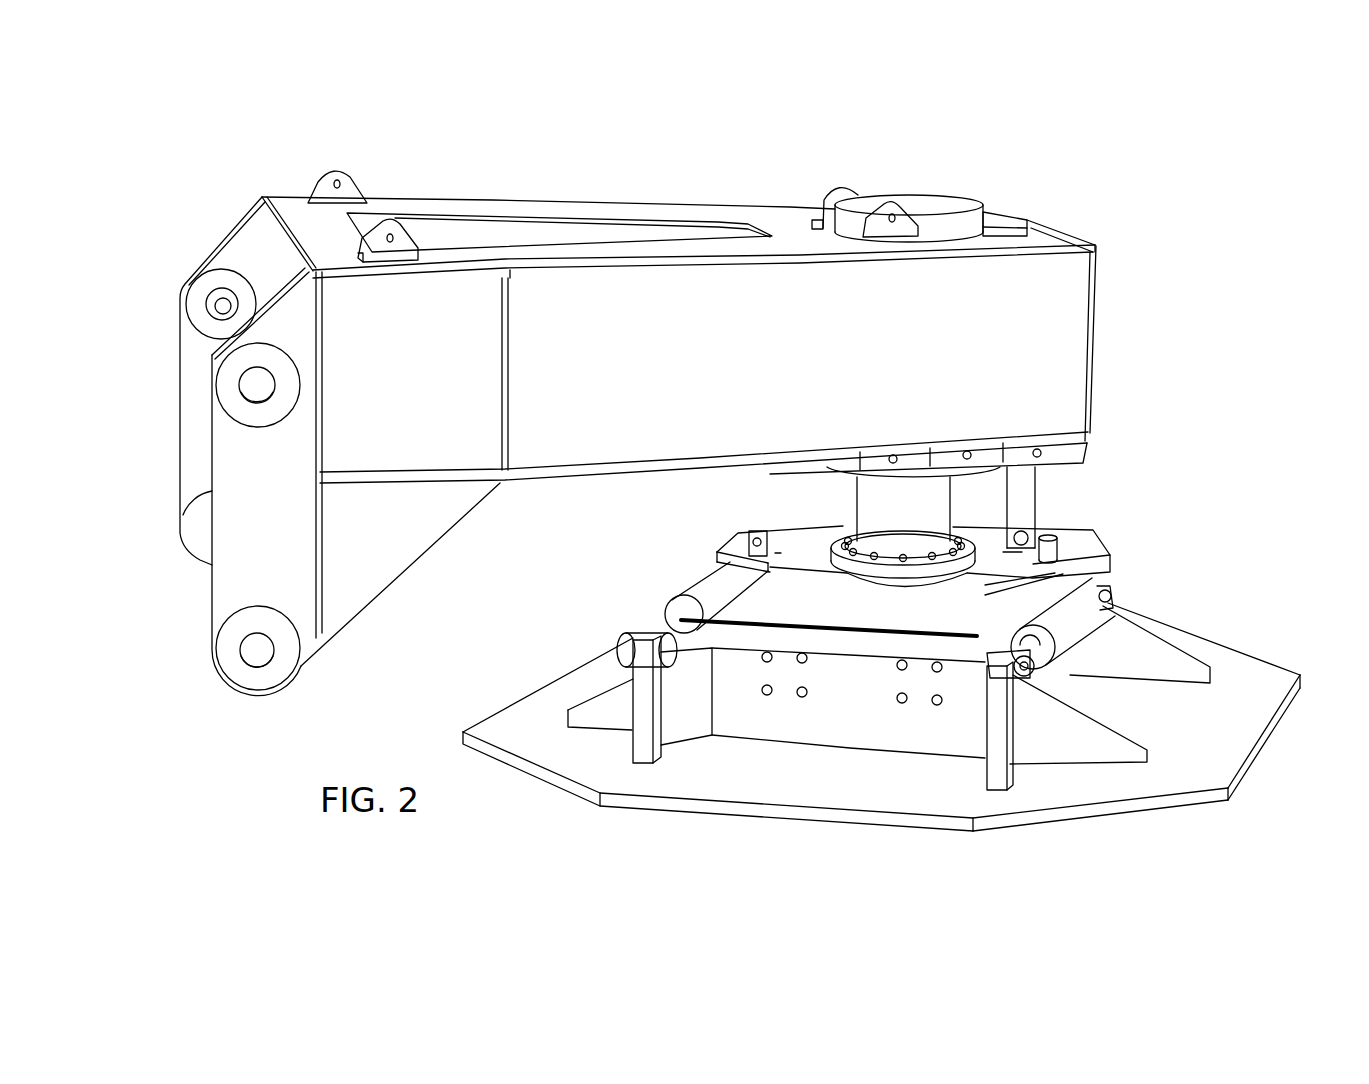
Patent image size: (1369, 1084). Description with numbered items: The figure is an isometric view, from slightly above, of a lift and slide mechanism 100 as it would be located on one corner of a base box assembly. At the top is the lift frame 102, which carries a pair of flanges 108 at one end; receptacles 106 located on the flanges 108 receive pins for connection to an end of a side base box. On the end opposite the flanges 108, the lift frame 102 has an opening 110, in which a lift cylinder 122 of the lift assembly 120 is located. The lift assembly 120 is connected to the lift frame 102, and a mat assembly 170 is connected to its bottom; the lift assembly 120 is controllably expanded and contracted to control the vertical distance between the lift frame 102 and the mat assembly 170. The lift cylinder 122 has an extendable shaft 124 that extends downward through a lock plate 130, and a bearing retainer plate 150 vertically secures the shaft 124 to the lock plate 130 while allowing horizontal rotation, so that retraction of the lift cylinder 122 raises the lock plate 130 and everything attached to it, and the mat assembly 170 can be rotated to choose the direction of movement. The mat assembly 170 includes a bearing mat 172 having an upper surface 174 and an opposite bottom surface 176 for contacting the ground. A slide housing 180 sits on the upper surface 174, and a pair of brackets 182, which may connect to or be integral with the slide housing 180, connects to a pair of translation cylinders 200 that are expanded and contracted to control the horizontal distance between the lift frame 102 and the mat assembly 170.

The lift and slide mechanism 100 is at (1165, 202).
The lift frame 102 is at (1033, 337).
The receptacles 106 is at (200, 290).
The flanges 108 is at (197, 420).
The opening 110 is at (1000, 230).
The lift assembly 120 is at (1082, 496).
The lift cylinder 122 is at (935, 196).
The extendable shaft 124 is at (857, 502).
The lock plate 130 is at (1100, 558).
The bearing retainer plate 150 is at (842, 560).
The mat assembly 170 is at (1232, 606).
The bearing mat 172 is at (1250, 762).
The upper surface 174 is at (1218, 710).
The bottom surface 176 is at (1148, 830).
The slide housing 180 is at (850, 710).
The brackets 182 is at (642, 645).
The translation cylinders 200 is at (702, 588).